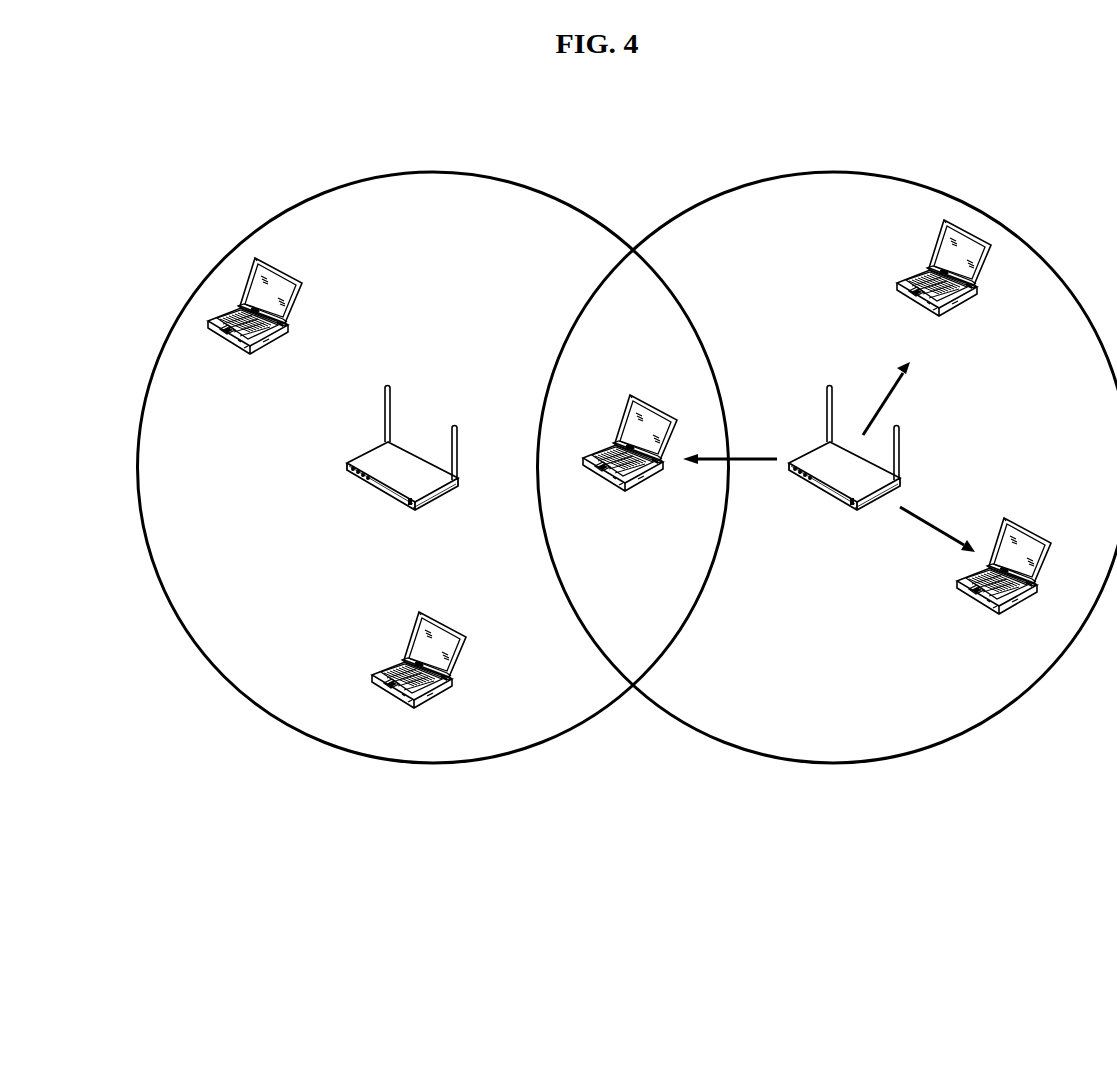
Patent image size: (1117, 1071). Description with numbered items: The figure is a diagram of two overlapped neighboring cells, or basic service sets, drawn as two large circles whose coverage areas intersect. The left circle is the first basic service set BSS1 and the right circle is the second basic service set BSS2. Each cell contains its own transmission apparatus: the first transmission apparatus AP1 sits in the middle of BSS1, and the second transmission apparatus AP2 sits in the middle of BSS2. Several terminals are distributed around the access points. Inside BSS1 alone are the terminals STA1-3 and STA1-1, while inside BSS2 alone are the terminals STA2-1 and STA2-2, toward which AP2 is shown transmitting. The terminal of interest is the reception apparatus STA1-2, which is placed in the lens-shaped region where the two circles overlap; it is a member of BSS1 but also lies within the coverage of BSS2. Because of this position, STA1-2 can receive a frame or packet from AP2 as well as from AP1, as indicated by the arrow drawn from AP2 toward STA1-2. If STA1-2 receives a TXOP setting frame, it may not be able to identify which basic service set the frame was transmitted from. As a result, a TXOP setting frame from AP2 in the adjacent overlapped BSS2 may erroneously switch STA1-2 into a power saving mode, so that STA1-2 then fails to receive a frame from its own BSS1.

The first basic service set BSS1 is at (433, 467).
The second basic service set BSS2 is at (828, 467).
The first transmission apparatus AP1 is at (402, 469).
The second transmission apparatus AP2 is at (844, 468).
The station STA1-1 is at (419, 679).
The reception apparatus STA1-2 is at (630, 463).
The station STA1-3 is at (255, 325).
The station STA2-1 is at (944, 286).
The station STA2-2 is at (1004, 584).